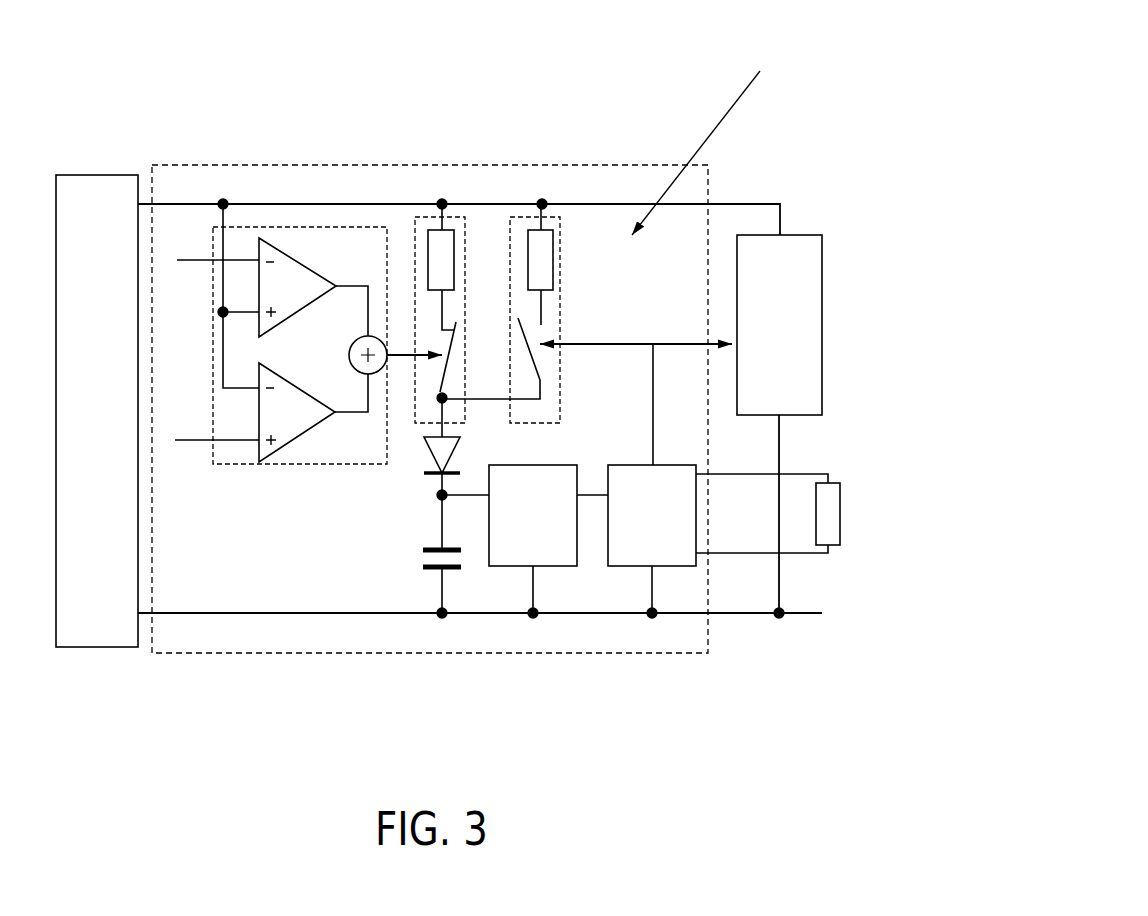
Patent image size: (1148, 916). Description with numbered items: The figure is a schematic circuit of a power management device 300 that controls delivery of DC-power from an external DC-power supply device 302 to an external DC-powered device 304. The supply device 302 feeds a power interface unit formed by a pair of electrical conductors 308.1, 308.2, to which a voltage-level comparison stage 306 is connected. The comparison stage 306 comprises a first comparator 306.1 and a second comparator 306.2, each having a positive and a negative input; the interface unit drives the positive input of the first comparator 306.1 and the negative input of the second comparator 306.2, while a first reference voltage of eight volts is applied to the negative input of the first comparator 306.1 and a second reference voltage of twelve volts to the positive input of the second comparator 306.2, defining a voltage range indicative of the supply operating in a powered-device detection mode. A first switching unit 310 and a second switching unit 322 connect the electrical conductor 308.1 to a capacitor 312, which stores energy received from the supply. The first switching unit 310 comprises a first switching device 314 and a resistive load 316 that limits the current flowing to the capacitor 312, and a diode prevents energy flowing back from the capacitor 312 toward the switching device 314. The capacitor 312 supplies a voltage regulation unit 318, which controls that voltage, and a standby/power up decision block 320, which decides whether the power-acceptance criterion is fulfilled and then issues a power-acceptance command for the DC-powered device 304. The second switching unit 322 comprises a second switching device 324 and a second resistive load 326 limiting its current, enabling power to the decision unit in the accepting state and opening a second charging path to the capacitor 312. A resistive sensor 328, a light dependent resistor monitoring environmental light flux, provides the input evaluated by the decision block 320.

The power management device 300 is at (166, 153).
The DC-power supply device 302 is at (95, 647).
The DC-powered device 304 is at (795, 235).
The voltage-level comparison stage 306 is at (302, 344).
The first comparator 306.1 is at (273, 232).
The second comparator 306.2 is at (253, 447).
The electrical conductor 308.1 is at (633, 204).
The electrical conductor 308.2 is at (290, 613).
The first switching unit 310 is at (433, 307).
The capacitor 312 is at (430, 575).
The first switching device 314 is at (437, 372).
The resistive load 316 is at (452, 214).
The voltage regulation unit 318 is at (563, 566).
The standby/power up decision block 320 is at (680, 566).
The second switching unit 322 is at (637, 215).
The second switching device 324 is at (555, 250).
The second resistive load 326 is at (553, 333).
The resistive sensor 328 is at (815, 525).